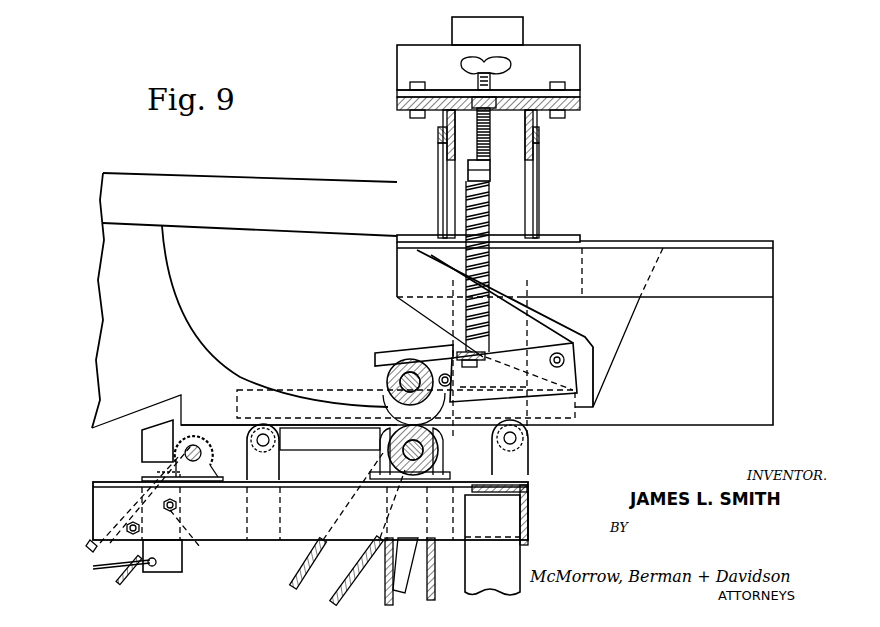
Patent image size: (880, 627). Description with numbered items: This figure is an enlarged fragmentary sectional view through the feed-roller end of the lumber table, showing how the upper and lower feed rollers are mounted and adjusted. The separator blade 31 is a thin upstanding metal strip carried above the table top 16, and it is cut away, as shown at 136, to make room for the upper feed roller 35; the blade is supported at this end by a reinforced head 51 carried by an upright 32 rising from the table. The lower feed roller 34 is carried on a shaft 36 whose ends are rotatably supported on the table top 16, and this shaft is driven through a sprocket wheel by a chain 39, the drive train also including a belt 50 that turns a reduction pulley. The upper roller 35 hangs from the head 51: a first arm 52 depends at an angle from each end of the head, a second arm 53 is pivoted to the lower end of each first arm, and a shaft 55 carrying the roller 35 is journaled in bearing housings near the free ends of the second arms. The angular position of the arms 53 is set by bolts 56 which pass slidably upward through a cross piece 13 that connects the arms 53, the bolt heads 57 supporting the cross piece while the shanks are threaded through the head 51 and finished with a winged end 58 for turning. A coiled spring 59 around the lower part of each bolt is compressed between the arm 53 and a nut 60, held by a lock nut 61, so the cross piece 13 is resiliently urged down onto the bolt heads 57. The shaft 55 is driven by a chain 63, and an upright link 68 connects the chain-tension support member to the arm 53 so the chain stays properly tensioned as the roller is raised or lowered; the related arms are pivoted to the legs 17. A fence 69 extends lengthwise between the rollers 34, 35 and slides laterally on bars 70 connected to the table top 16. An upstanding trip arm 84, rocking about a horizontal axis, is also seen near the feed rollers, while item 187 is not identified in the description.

The cross piece 13 is at (453, 353).
The table top 16 is at (292, 503).
The legs 17 is at (525, 555).
The separator blade 31 is at (688, 300).
The upright 32 is at (513, 30).
The lower feed roller 34 is at (393, 477).
The upper feed roller 35 is at (380, 373).
The shaft 36 is at (390, 450).
The chain 39 is at (300, 572).
The belt 50 is at (518, 440).
The reinforced head 51 is at (567, 75).
The first arm 52 is at (513, 323).
The second arm 53 is at (570, 387).
The shaft 55 is at (398, 360).
The bolt 56 is at (490, 133).
The bolt head 57 is at (480, 367).
The winged end 58 is at (513, 63).
The coiled spring 59 is at (480, 253).
The nut 60 is at (490, 175).
The lock nut 61 is at (468, 163).
The chain 63 is at (437, 573).
The upright link 68 is at (398, 567).
The fence 69 is at (330, 400).
The bar 70 is at (257, 433).
The trip arm 84 is at (160, 433).
The cut-away 136 is at (197, 323).
The link 187 is at (183, 532).